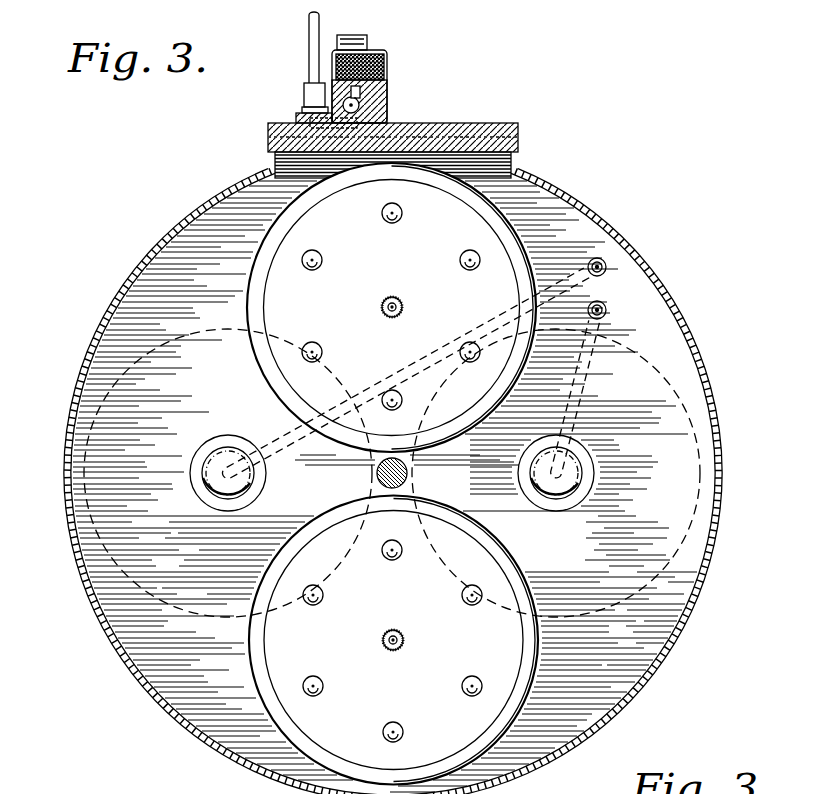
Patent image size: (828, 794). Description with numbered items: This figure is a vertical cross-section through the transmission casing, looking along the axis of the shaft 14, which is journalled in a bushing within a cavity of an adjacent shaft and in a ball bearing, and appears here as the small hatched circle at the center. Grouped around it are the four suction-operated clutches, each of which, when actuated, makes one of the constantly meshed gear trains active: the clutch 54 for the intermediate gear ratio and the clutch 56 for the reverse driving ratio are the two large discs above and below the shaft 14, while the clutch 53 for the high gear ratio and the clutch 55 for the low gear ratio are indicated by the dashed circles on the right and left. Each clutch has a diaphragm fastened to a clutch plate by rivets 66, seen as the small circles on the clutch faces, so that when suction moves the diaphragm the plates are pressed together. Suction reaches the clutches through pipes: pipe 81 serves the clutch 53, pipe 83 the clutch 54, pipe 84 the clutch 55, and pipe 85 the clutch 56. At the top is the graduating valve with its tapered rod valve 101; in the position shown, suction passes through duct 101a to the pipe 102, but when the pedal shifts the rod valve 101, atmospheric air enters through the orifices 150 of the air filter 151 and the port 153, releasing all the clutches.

The orifices 150 is at (371, 50).
The air filter 151 is at (388, 68).
The port 153 is at (356, 90).
The graduated rod valve 101 is at (357, 106).
The duct 101a is at (298, 117).
The pipe 102 is at (309, 67).
The clutch 54 is at (290, 222).
The clutch 56 is at (270, 687).
The pipe 83 is at (398, 301).
The pipe 85 is at (387, 651).
The rivets 66 is at (467, 351).
The pipe 84 is at (606, 265).
The pipe 81 is at (607, 310).
The clutch 55 is at (200, 327).
The clutch 53 is at (635, 373).
The shaft 14 is at (409, 474).